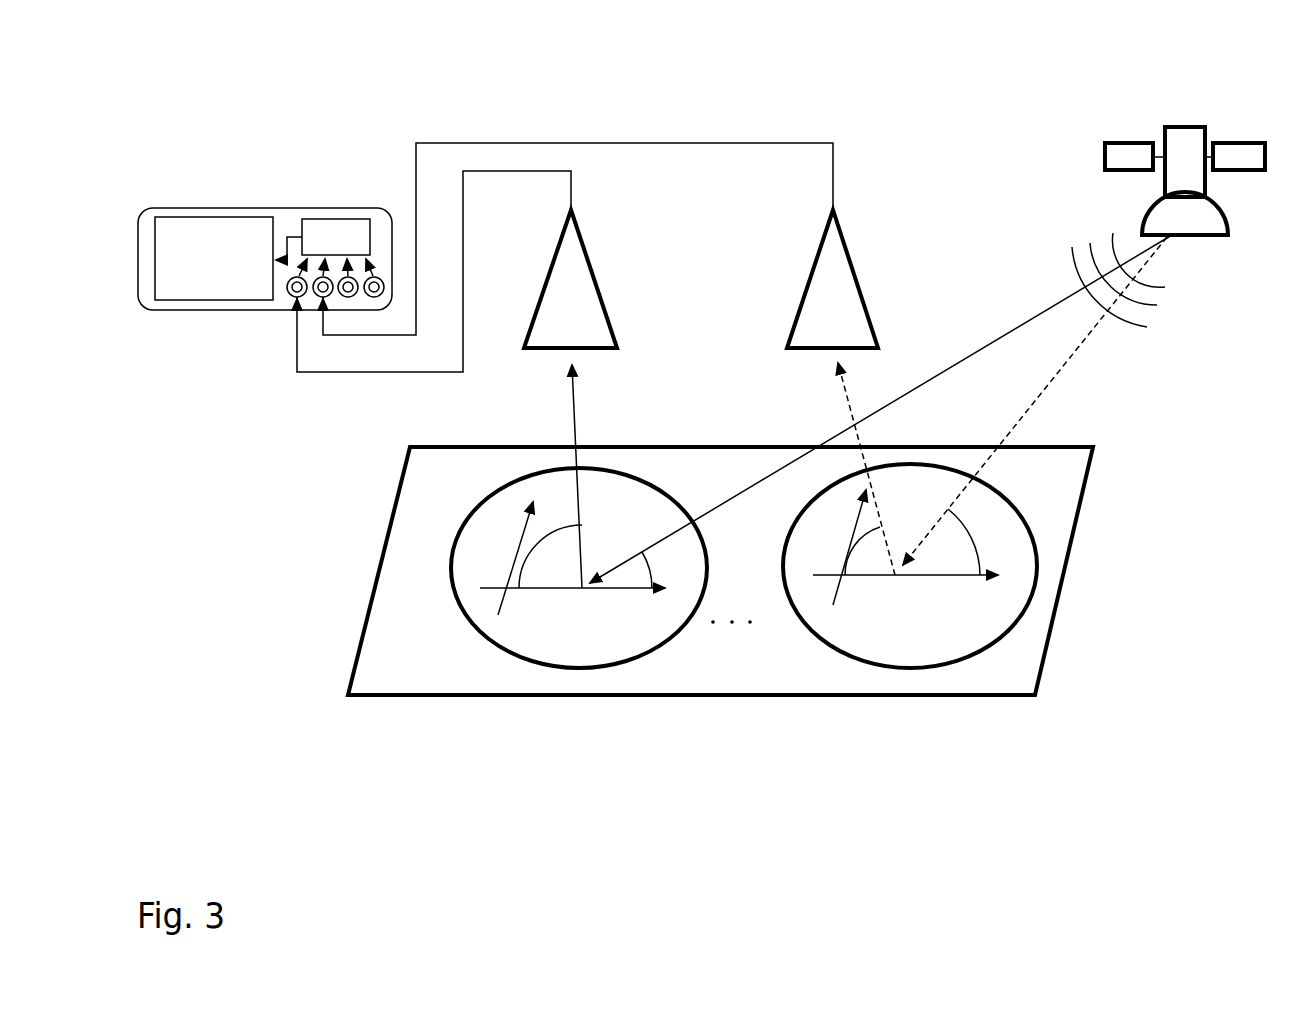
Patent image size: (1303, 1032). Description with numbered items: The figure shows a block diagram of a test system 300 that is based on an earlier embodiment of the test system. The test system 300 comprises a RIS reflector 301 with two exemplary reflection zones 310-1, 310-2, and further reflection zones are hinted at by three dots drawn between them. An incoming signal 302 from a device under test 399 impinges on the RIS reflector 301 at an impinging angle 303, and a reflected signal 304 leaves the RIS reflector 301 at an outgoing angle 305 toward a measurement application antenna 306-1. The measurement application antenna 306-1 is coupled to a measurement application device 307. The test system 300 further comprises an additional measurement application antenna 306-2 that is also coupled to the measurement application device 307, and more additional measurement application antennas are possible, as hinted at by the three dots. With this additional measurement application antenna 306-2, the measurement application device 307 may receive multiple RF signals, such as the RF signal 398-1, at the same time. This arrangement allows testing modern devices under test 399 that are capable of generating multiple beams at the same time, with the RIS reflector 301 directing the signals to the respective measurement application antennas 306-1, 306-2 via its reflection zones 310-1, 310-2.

The test system 300 is at (338, 796).
The RIS reflector 301 is at (378, 565).
The incoming signal 302 is at (745, 487).
The impinging angle 303 is at (703, 556).
The reflected signal 304 is at (568, 402).
The outgoing angle 305 is at (543, 545).
The measurement application antenna 306-1 is at (578, 230).
The measurement application antenna 306-2 is at (843, 227).
The measurement application device 307 is at (258, 208).
The reflection zone 310-1 is at (645, 645).
The reflection zone 310-2 is at (977, 643).
The RF signal 398-1 is at (1088, 240).
The device under test 399 is at (1168, 125).